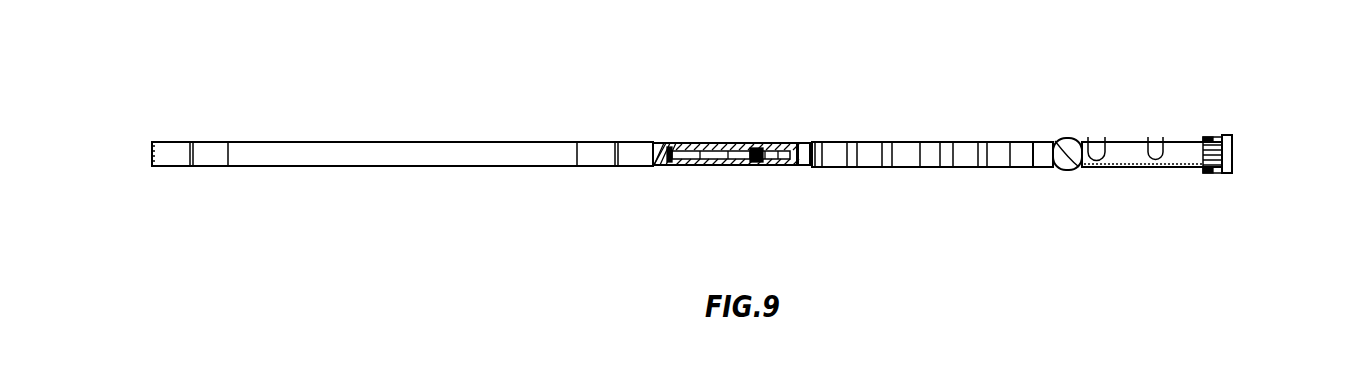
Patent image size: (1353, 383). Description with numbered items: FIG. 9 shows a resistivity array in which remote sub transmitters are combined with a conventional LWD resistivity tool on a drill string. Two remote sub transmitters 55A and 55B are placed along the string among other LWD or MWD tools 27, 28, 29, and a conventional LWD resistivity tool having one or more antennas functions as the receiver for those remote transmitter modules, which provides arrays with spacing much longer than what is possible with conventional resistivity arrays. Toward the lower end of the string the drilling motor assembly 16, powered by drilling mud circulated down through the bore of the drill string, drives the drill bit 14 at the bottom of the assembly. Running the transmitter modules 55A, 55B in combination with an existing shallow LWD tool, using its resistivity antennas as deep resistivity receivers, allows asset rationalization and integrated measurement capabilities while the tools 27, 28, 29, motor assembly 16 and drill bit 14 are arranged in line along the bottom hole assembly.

The drill bit 14 is at (1233, 149).
The drilling motor assembly 16 is at (1118, 138).
The LWD or MWD tool 27 is at (315, 168).
The LWD or MWD tool 28 is at (728, 141).
The LWD or MWD tool 29 is at (880, 141).
The remote sub transmitter 55A is at (191, 142).
The remote sub transmitter 55B is at (616, 141).